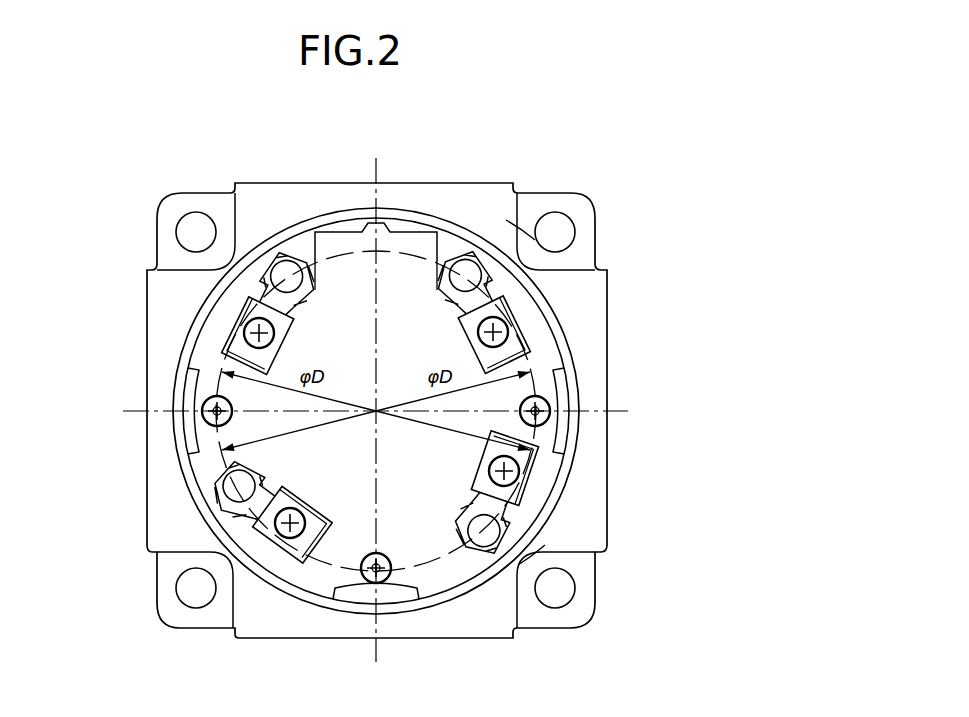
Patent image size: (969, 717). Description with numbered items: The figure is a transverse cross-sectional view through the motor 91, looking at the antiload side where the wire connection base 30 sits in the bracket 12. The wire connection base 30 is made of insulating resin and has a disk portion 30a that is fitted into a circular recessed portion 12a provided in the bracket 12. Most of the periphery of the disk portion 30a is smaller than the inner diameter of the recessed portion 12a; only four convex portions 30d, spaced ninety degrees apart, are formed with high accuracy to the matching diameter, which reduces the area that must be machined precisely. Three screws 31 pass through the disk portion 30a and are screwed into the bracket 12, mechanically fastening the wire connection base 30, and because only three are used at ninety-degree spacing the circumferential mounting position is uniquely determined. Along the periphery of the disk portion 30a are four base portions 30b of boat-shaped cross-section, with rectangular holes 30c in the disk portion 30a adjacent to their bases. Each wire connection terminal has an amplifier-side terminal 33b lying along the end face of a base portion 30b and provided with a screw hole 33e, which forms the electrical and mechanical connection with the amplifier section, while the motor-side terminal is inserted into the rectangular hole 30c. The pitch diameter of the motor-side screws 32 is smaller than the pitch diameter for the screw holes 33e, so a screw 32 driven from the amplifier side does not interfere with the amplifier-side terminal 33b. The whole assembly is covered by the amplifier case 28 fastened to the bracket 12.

The motor 91 is at (391, 367).
The amplifier case 28 is at (505, 190).
The bracket 12 is at (440, 228).
The recessed portion 12a is at (550, 330).
The wire connection base 30 is at (366, 414).
The disk portion 30a is at (356, 283).
The base portion 30b is at (303, 254).
The rectangular hole 30c is at (228, 330).
The convex portion 30d is at (388, 232).
The screw 31 is at (203, 410).
The screw 32 is at (242, 347).
The amplifier-side terminal 33b is at (243, 263).
The screw hole 33e is at (524, 222).